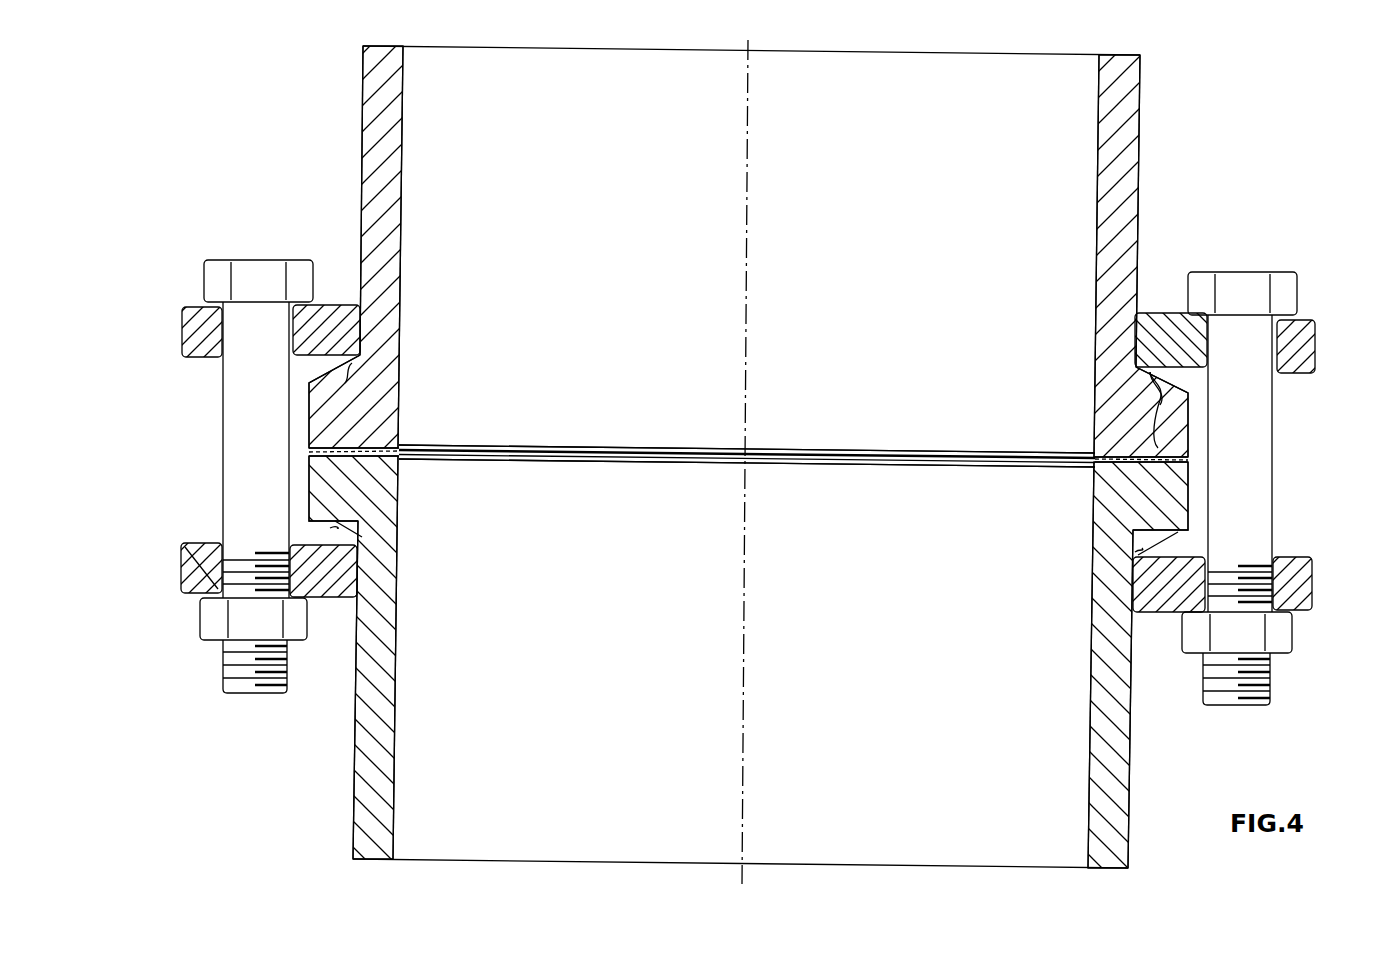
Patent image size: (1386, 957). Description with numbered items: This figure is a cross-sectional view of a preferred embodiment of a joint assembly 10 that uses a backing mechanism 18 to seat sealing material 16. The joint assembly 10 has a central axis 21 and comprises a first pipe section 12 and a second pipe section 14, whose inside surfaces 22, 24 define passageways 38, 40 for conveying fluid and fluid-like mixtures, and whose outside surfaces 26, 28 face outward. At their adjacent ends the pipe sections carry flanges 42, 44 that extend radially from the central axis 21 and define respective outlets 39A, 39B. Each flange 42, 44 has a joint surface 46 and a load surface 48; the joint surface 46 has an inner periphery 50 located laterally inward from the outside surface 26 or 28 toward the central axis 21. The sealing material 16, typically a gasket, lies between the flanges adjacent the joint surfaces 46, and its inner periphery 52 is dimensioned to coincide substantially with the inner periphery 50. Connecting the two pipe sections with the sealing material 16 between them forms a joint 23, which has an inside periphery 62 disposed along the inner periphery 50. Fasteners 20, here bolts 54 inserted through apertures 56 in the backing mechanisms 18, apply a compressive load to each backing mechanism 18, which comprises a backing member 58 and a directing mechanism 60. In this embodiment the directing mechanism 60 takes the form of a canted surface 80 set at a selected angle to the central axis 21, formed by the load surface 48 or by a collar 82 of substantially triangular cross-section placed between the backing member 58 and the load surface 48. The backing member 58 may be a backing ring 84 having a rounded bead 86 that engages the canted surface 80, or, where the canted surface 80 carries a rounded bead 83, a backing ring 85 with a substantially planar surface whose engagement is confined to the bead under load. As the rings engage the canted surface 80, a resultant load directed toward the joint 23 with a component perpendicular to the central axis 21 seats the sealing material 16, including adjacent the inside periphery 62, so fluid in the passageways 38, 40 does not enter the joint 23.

The joint assembly 10 is at (1291, 126).
The first pipe section 12 is at (1133, 138).
The second pipe section 14 is at (1120, 783).
The sealing material 16 is at (309, 452).
The backing mechanism 18 is at (327, 659).
The fastener 20 is at (749, 457).
The central axis 21 is at (752, 114).
The inside surface of first pipe section 22 is at (1097, 143).
The joint 23 is at (426, 490).
The inside surface of second pipe section 24 is at (1088, 778).
The outside surface of first pipe section 26 is at (1139, 178).
The outside surface of second pipe section 28 is at (1132, 745).
The passageway 38 is at (866, 204).
The outlet 39A is at (993, 440).
The outlet 39B is at (509, 479).
The passageway 40 is at (860, 679).
The flange 42 is at (1188, 416).
The flange 44 is at (1187, 493).
The joint surface 46 is at (1130, 435).
The load surface 48 is at (1220, 522).
The inner periphery of joint surface 50 is at (398, 445).
The inner periphery of sealing material 52 is at (412, 452).
The bolt 54 is at (223, 396).
The aperture 56 is at (223, 320).
The backing member 58 is at (183, 336).
The directing mechanism 60 is at (362, 381).
The inside periphery of joint 62 is at (389, 478).
The canted surface 80 is at (1165, 376).
The collar 82 is at (337, 528).
The rounded bead 83 is at (352, 363).
The backing ring 84 is at (183, 548).
The backing ring 85 is at (350, 328).
The rounded bead 86 is at (340, 545).